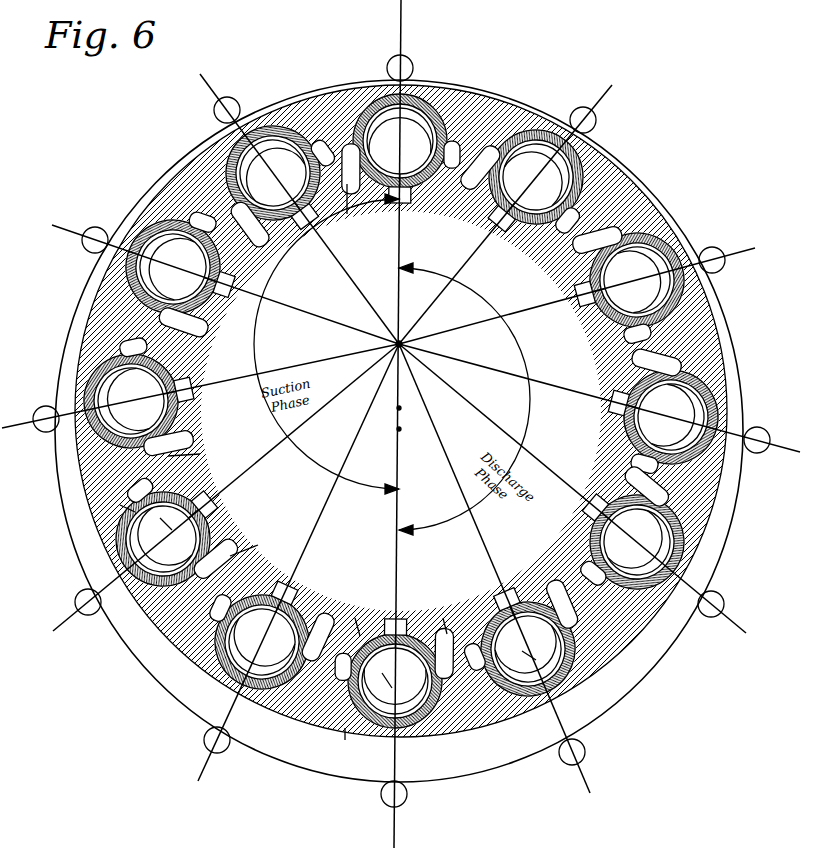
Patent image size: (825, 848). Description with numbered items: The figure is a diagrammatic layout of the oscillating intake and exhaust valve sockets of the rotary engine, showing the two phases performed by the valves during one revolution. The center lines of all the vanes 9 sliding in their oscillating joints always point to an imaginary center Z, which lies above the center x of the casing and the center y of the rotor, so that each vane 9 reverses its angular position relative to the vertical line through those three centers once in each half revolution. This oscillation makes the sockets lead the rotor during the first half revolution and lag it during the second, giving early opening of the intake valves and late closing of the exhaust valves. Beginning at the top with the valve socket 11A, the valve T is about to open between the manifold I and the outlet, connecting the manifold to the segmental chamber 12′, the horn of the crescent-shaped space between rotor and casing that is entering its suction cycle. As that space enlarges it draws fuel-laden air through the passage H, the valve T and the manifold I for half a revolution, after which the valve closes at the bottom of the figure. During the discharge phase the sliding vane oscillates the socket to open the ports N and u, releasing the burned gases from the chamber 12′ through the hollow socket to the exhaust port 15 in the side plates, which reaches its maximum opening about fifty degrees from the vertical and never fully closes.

The segmental chamber 12′ is at (399, 431).
The valve socket 11A is at (434, 94).
The vane 9 is at (313, 224).
The exhaust port 15 is at (616, 549).
The imaginary center Z is at (392, 344).
The center of the casing x is at (398, 430).
The center of the rotor y is at (401, 408).
The passage H is at (672, 538).
The valve T is at (660, 545).
The manifold I is at (307, 410).
The port N is at (222, 633).
The port u is at (342, 601).